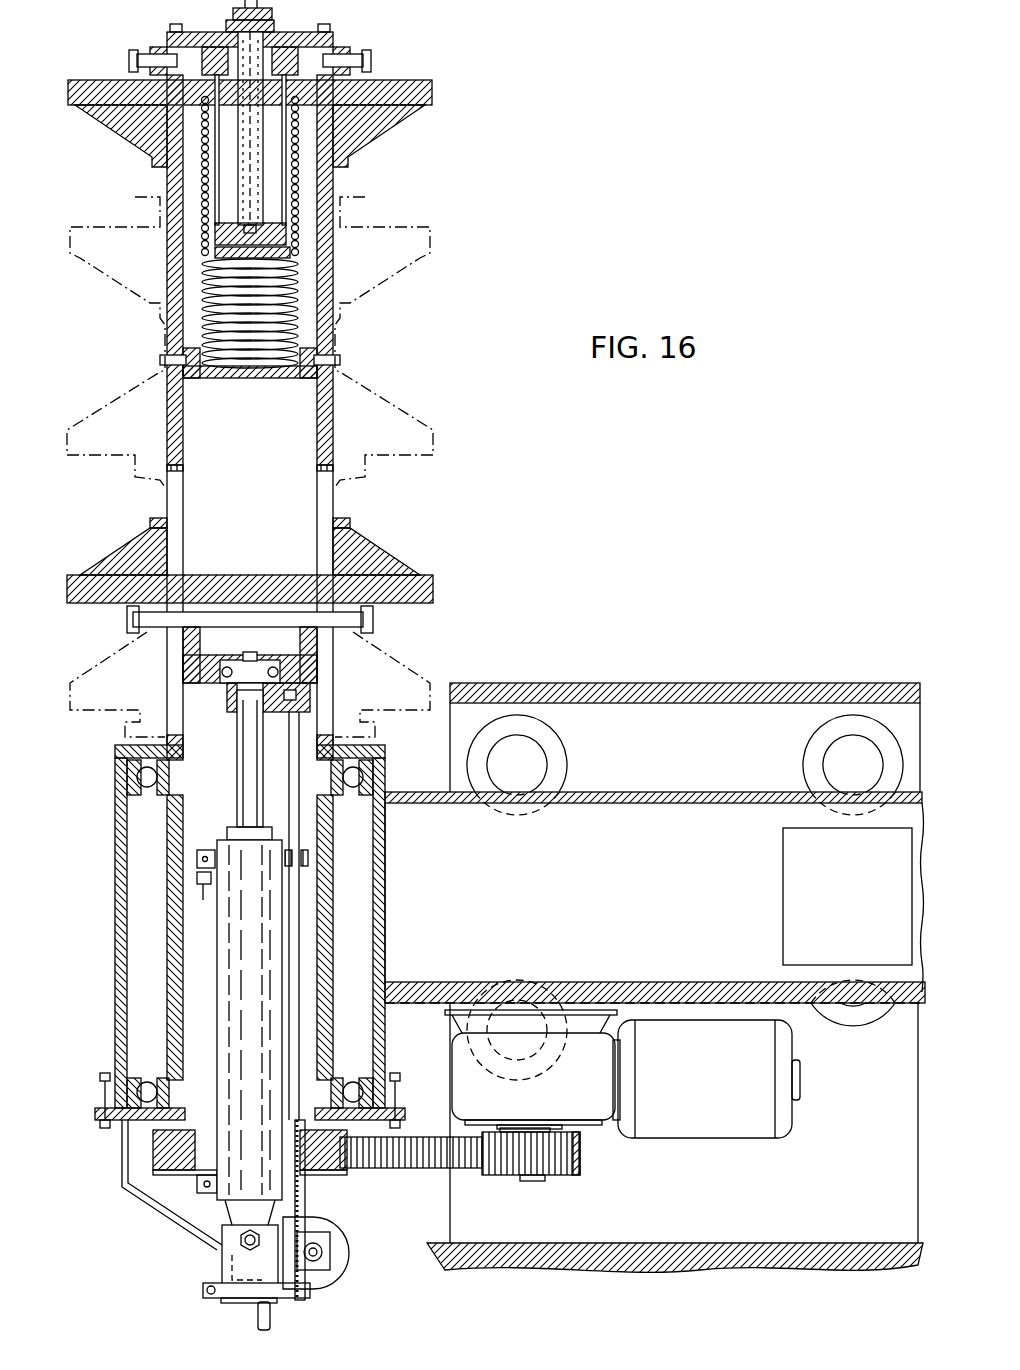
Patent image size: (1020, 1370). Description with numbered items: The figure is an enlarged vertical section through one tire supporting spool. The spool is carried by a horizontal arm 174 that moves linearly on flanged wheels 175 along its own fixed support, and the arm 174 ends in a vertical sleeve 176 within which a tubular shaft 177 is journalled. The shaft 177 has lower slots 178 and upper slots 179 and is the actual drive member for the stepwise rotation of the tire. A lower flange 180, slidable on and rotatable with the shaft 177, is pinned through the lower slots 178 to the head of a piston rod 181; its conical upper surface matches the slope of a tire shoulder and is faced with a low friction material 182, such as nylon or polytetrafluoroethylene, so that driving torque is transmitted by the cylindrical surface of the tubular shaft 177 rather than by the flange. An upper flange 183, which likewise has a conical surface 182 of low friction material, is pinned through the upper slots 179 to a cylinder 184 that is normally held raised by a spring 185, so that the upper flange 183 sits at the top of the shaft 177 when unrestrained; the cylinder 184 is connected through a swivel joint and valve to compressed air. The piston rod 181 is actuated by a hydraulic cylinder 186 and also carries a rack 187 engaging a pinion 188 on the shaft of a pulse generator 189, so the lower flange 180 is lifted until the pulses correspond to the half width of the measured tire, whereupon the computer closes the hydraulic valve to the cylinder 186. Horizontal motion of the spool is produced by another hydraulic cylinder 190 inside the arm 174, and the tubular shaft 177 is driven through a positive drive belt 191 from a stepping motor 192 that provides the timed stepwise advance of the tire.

The horizontal arm 174 is at (640, 803).
The flanged wheels 175 is at (530, 752).
The vertical sleeve 176 is at (118, 905).
The tubular shaft 177 is at (335, 408).
The lower slots 178 is at (330, 500).
The upper slots 179 is at (172, 186).
The lower flange 180 is at (433, 585).
The piston rod 181 is at (242, 771).
The low friction material 182 is at (392, 128).
The upper flange 183 is at (432, 92).
The cylinder 184 is at (290, 200).
The spring 185 is at (205, 312).
The hydraulic cylinder 186 is at (237, 996).
The rack 187 is at (300, 1203).
The pinion 188 is at (320, 1250).
The pulse generator 189 is at (348, 1265).
The hydraulic cylinder 190 is at (800, 910).
The positive drive belt 191 is at (420, 1150).
The stepping motor 192 is at (695, 1118).